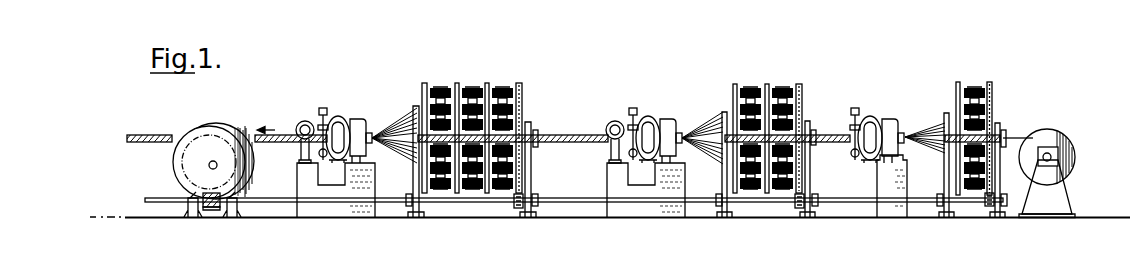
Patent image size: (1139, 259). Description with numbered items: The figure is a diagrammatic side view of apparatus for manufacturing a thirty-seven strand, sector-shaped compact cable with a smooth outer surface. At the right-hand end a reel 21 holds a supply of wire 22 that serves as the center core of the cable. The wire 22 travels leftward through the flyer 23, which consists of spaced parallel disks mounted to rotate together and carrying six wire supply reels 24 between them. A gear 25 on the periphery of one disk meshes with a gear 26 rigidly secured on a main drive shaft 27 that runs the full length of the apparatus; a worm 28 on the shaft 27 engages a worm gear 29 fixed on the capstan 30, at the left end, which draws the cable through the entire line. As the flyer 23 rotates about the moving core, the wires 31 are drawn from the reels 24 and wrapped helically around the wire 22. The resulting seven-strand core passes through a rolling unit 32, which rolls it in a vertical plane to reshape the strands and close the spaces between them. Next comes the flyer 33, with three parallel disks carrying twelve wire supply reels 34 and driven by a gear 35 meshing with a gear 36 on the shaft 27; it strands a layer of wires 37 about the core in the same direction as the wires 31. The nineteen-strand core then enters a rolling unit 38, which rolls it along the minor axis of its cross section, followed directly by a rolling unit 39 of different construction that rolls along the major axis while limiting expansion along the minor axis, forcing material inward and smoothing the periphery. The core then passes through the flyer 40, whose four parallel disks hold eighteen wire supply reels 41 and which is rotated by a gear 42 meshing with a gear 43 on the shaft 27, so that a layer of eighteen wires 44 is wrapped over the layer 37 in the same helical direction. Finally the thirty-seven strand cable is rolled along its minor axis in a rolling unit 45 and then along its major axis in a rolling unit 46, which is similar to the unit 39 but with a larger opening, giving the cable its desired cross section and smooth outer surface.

The reel 21 is at (1062, 134).
The wire 22 is at (1015, 137).
The flyer 23 is at (984, 142).
The wire supply reels 24 is at (973, 89).
The gear 25 is at (993, 85).
The gear 26 is at (990, 206).
The main drive shaft 27 is at (163, 199).
The worm 28 is at (212, 209).
The worm gear 29 is at (249, 191).
The capstan 30 is at (210, 126).
The wires 31 is at (931, 133).
The rolling unit 32 is at (880, 115).
The flyer 33 is at (776, 143).
The wire supply reels 34 is at (785, 89).
The gear 35 is at (802, 86).
The gear 36 is at (800, 208).
The wires 37 is at (708, 127).
The rolling unit 38 is at (655, 117).
The rolling unit 39 is at (617, 121).
The flyer 40 is at (487, 138).
The wire supply reels 41 is at (498, 88).
The gear 42 is at (522, 85).
The gear 43 is at (518, 208).
The wires 44 is at (397, 125).
The rolling unit 45 is at (340, 117).
The rolling unit 46 is at (307, 121).